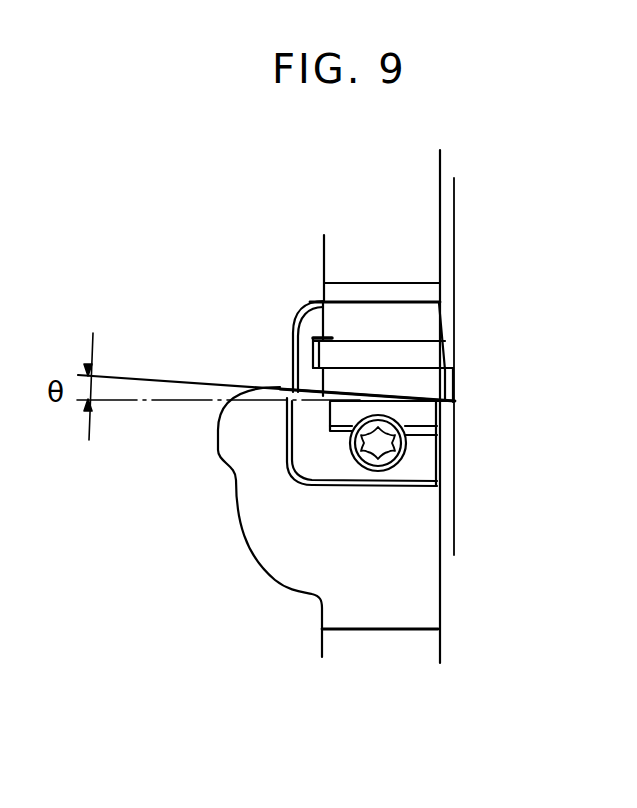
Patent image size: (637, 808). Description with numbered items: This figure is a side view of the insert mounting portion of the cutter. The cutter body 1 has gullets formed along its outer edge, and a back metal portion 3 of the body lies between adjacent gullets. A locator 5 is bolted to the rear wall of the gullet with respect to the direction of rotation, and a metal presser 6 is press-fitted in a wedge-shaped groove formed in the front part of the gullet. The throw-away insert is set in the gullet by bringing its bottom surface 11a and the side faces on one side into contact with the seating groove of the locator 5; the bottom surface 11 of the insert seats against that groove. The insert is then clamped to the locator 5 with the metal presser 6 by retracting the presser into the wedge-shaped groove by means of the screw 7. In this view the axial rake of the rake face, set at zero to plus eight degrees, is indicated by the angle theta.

The cutter body 1 is at (272, 620).
The back metal portion 3 is at (413, 182).
The locator 5 is at (400, 323).
The metal presser 6 is at (418, 462).
The screw 7 is at (355, 428).
The bottom surface 11 is at (453, 403).
The bottom surface 11a is at (410, 348).